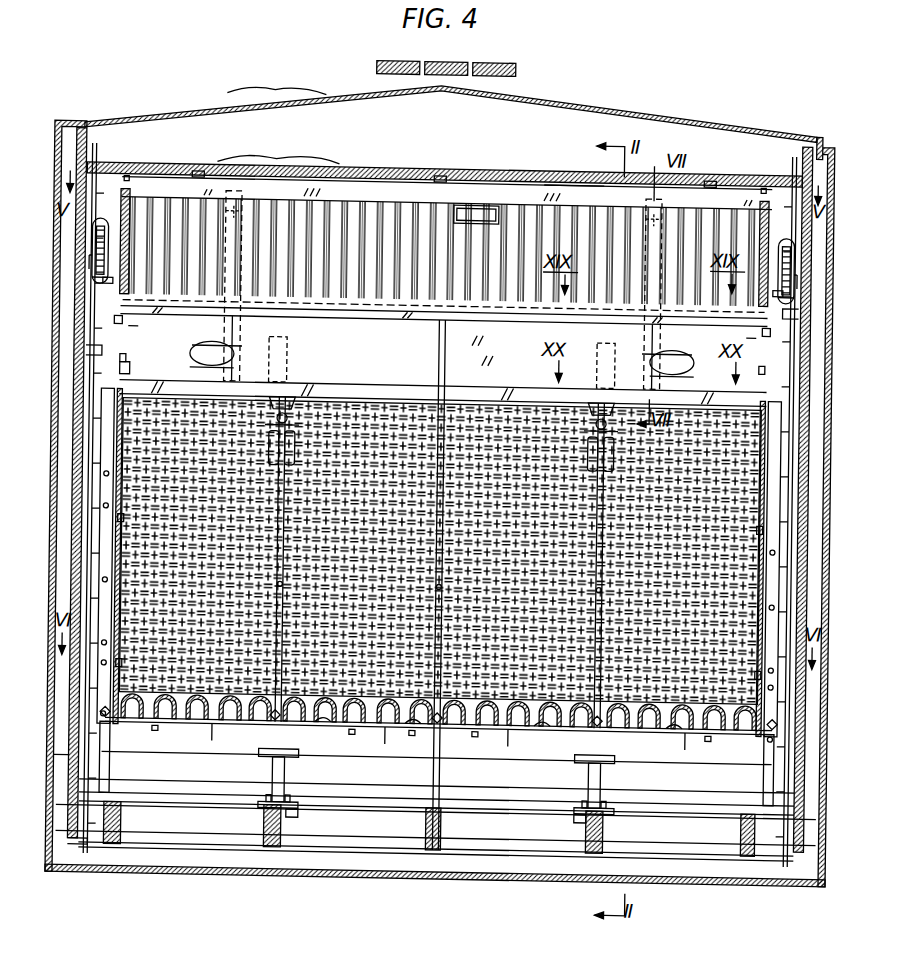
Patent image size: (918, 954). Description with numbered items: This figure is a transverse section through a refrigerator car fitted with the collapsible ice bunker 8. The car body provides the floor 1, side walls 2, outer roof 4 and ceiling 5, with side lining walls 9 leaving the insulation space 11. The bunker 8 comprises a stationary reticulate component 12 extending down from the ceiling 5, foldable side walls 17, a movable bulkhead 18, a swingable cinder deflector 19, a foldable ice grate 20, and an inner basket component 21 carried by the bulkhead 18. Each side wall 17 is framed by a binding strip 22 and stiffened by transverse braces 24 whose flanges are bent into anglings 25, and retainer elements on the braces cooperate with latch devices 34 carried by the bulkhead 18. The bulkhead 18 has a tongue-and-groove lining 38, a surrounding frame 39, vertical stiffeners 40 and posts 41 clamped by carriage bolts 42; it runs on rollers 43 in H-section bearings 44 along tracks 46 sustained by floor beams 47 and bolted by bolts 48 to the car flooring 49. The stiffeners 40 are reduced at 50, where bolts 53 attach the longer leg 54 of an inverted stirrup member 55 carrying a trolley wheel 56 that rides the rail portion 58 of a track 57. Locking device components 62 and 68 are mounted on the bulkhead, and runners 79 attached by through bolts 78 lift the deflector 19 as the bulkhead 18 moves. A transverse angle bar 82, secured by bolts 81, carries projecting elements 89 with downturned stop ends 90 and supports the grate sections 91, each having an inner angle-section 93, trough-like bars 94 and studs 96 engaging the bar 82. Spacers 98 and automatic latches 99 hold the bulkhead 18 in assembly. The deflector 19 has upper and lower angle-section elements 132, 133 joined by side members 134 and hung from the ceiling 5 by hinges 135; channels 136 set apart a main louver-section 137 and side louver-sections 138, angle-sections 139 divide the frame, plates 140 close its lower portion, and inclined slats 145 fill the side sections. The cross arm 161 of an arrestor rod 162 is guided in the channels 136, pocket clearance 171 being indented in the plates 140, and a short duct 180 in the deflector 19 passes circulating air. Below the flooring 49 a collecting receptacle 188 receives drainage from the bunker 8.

The floor 1 is at (420, 880).
The side walls 2 is at (439, 489).
The outer roof 4 is at (451, 98).
The inner roof or ceiling 5 is at (522, 169).
The collapsible bunker 8 is at (278, 144).
The side lining walls 9 is at (440, 503).
The insulation space 11 is at (440, 505).
The stationary end wall or reticulate component 12 is at (414, 562).
The foldable side walls 17 is at (442, 332).
The movable bulkhead 18 is at (437, 550).
The cinder deflector 19 is at (390, 200).
The ice grate 20 is at (440, 551).
The inner basket component 21 is at (467, 523).
The binding strip 22 is at (763, 183).
The transverse braces 24 is at (457, 430).
The anglings 25 is at (142, 369).
The latch device 34 is at (439, 563).
The tongue-and-groove lining 38 is at (60, 751).
The surrounding frame 39 is at (69, 801).
The vertical stiffeners 40 is at (436, 787).
The posts 41 is at (445, 562).
The carriage bolts 42 is at (780, 590).
The rollers 43 is at (436, 783).
The H-section bearings 44 is at (435, 779).
The tracks 46 is at (436, 824).
The floor beams 47 is at (432, 828).
The bolts 48 is at (436, 815).
The car flooring 49 is at (436, 822).
The reduced parts 50 is at (440, 324).
The bolts 53 is at (470, 348).
The longer leg 54 is at (442, 302).
The inverted stirrup member 55 is at (442, 250).
The trolley wheel 56 is at (443, 259).
The track 57 is at (443, 274).
The rail portion 58 is at (460, 276).
The locking device component 62 is at (446, 364).
The locking device components 68 is at (450, 348).
The through bolts 78 is at (442, 363).
The runner 79 is at (442, 350).
The bolts 81 is at (439, 713).
The transverse angle bar 82 is at (438, 741).
The outwardly projecting elements 89 is at (421, 745).
The downwardly turned free ends 90 is at (324, 695).
The grate sections 91 is at (439, 694).
The inner angle-section 93 is at (448, 744).
The trough-like bars 94 is at (543, 712).
The pins or studs 96 is at (435, 744).
The spacers 98 is at (454, 421).
The automatic latches 99 is at (456, 452).
The upper angle-section element 132 is at (563, 183).
The lower angle-section element 133 is at (444, 346).
The side members 134 is at (421, 291).
The hinges 135 is at (435, 176).
The interposed channels 136 is at (446, 242).
The main louver-section 137 is at (447, 194).
The side louver-sections 138 is at (459, 196).
The intermediate transverse angle-sections 139 is at (650, 346).
The coplanar plates 140 is at (443, 325).
The inclined slats 145 is at (429, 192).
The cross arm 161 is at (442, 289).
The arrestor rod 162 is at (443, 223).
The pocket clearance 171 is at (442, 333).
The short duct 180 is at (477, 203).
The collecting receptacle 188 is at (436, 833).